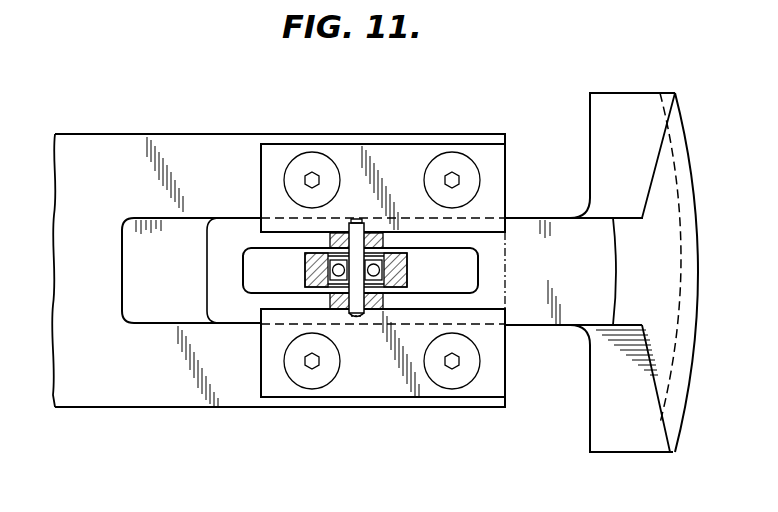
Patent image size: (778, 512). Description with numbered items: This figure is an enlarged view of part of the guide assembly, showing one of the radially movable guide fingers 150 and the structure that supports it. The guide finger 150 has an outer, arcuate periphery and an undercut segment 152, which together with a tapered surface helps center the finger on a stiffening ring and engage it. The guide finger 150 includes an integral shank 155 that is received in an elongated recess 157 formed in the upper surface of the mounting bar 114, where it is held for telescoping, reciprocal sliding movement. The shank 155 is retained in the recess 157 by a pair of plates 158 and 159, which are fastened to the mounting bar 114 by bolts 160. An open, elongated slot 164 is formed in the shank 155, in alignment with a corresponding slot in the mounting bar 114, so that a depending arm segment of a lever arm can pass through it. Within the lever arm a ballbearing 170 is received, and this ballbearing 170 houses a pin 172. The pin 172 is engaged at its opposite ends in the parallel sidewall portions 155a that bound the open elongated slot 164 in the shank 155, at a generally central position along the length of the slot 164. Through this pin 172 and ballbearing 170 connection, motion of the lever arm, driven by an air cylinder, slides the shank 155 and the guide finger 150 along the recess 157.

The mounting bar 114 is at (125, 366).
The guide finger 150 is at (643, 64).
The undercut segment 152 is at (660, 423).
The integral shank 155 is at (562, 228).
The parallel sidewall portions 155a is at (452, 297).
The elongated recess 157 is at (136, 226).
The plate 158 is at (415, 147).
The plate 159 is at (400, 398).
The bolts 160 is at (316, 372).
The open elongated slot 164 is at (255, 255).
The ballbearing 170 is at (312, 278).
The pin 172 is at (353, 312).